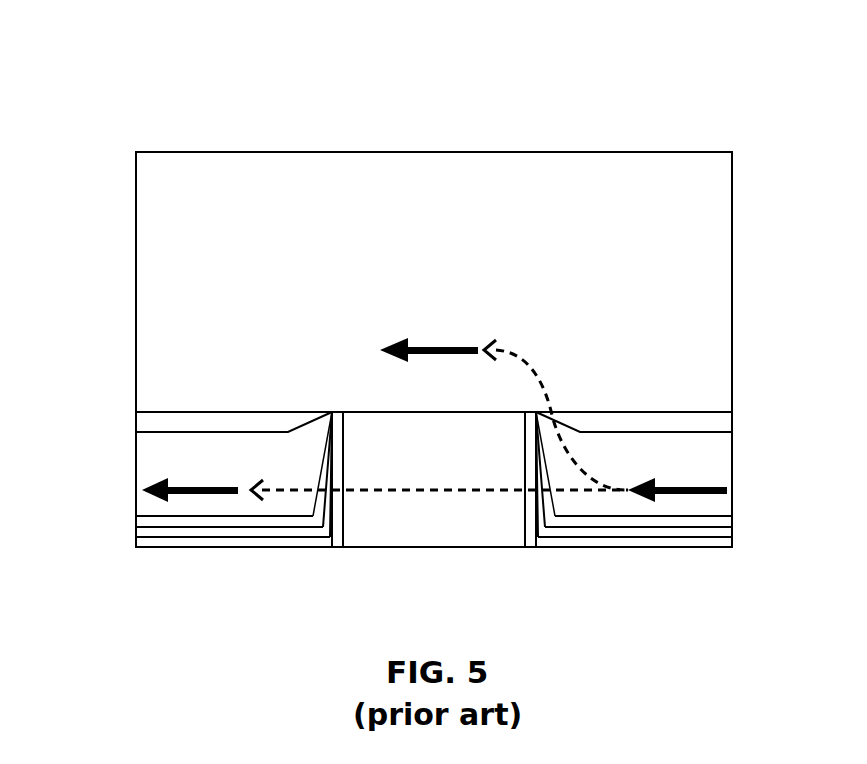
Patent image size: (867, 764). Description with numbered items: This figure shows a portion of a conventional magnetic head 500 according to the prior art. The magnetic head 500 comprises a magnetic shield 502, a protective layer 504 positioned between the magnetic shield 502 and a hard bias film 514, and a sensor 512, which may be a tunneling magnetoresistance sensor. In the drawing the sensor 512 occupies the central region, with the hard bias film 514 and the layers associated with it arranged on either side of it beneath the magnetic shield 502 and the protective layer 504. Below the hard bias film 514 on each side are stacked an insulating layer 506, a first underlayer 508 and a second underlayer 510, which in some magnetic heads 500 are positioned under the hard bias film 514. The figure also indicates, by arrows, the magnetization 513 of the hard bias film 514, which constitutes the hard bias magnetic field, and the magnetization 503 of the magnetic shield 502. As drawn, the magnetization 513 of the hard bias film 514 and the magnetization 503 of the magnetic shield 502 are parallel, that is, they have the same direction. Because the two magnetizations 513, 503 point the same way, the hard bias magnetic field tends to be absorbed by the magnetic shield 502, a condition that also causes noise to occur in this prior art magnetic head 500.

The magnetic head 500 is at (82, 100).
The magnetic shield 502 is at (457, 223).
The magnetization of the magnetic shield 503 is at (432, 345).
The protective layer 504 is at (145, 421).
The insulating layer 506 is at (137, 546).
The first underlayer 508 is at (145, 532).
The second underlayer 510 is at (145, 522).
The sensor 512 is at (456, 463).
The magnetization of the hard bias film 513 is at (208, 494).
The hard bias film 514 is at (145, 462).